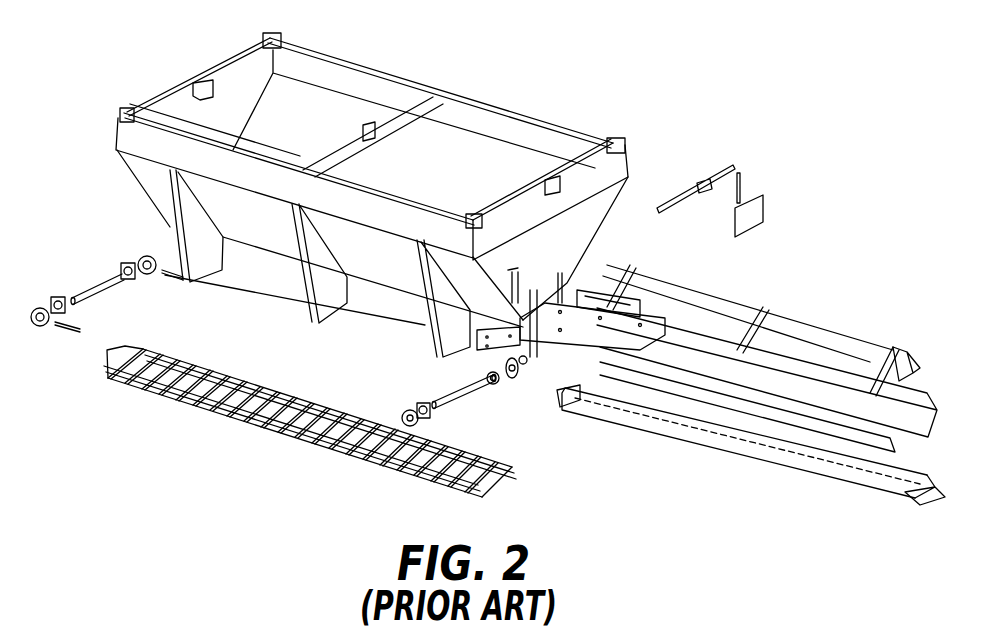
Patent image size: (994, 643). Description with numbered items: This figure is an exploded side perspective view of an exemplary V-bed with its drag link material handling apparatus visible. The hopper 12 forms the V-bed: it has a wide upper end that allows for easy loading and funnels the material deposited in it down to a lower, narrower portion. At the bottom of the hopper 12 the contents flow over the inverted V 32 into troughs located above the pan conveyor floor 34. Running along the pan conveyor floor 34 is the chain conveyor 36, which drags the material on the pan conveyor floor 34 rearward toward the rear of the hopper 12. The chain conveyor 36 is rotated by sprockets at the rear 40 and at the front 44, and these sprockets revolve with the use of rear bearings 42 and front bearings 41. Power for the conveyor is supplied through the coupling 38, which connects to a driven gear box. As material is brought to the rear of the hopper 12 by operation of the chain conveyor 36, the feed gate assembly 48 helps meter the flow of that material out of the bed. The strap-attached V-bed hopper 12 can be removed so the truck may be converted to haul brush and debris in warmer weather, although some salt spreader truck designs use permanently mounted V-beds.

The hopper 12 is at (477, 100).
The inverted V 32 is at (860, 347).
The pan conveyor floor 34 is at (767, 463).
The chain conveyor 36 is at (510, 477).
The coupling 38 is at (537, 370).
The rear sprockets 40 is at (493, 385).
The front bearings 41 is at (400, 413).
The rear bearings 42 is at (140, 257).
The front sprockets 44 is at (128, 278).
The feed gate assembly 48 is at (787, 205).